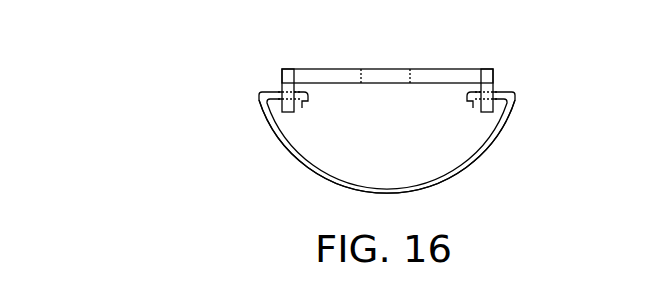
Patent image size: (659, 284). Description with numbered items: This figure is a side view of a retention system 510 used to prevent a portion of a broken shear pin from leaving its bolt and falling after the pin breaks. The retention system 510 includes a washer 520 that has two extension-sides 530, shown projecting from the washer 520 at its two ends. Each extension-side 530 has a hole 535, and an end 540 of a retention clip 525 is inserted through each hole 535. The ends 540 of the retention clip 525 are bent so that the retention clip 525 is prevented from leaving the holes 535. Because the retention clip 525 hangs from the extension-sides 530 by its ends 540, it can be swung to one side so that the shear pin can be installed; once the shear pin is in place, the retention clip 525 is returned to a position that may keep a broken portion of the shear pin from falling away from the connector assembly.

The retention system 510 is at (538, 112).
The washer 520 is at (480, 67).
The retention clip 525 is at (487, 158).
The extension-side 530 is at (299, 111).
The hole 535 is at (263, 75).
The end 540 is at (463, 102).